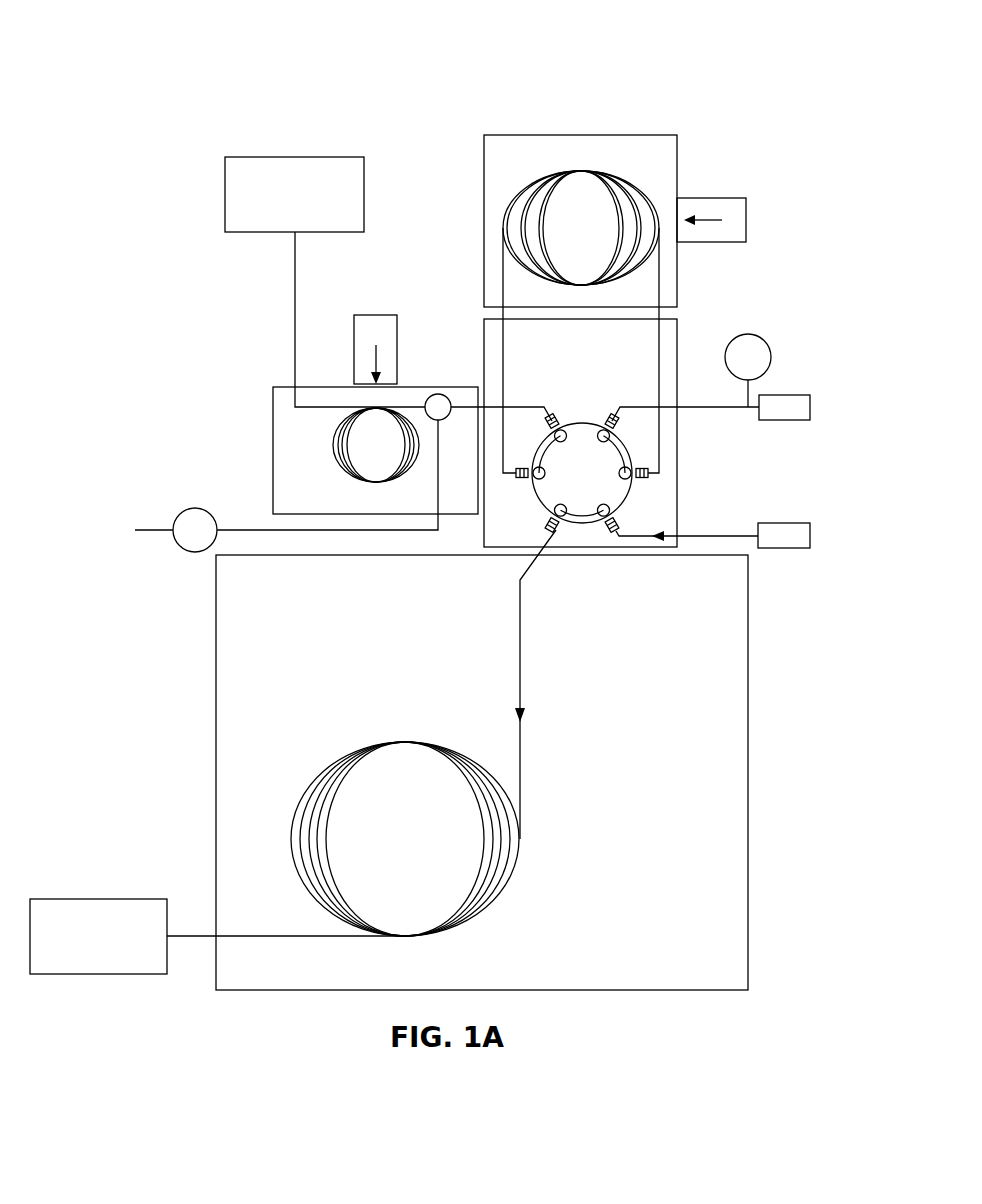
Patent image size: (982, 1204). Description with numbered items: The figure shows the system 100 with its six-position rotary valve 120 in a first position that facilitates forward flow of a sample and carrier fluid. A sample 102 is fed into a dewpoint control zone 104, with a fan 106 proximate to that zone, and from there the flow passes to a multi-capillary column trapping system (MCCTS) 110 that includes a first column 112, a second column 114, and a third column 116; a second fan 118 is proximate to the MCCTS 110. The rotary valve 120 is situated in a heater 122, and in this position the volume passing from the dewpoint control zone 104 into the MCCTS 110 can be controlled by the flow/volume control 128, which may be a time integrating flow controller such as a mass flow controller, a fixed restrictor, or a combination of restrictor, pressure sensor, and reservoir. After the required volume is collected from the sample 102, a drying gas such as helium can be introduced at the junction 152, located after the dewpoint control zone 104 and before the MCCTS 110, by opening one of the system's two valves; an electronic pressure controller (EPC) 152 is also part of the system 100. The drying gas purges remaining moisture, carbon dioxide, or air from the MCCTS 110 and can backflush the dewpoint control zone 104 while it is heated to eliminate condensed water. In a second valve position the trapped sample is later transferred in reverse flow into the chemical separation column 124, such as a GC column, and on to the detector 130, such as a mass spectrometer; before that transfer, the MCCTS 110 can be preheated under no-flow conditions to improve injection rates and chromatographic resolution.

The system 100 is at (163, 80).
The sample 102 is at (296, 157).
The dewpoint control zone 104 is at (312, 468).
The fan 106 is at (376, 313).
The multi-capillary column trapping system (MCCTS) 110 is at (555, 167).
The first column 112 is at (512, 192).
The second column 114 is at (522, 228).
The third column 116 is at (540, 236).
The fan 118 is at (747, 221).
The six-position rotary valve 120 is at (579, 524).
The heater 122 is at (565, 380).
The chemical separation column 124 is at (523, 846).
The flow/volume control 128 is at (811, 408).
The detector 130 is at (98, 899).
The electronic pressure controller (EPC) / junction 152 is at (441, 393).